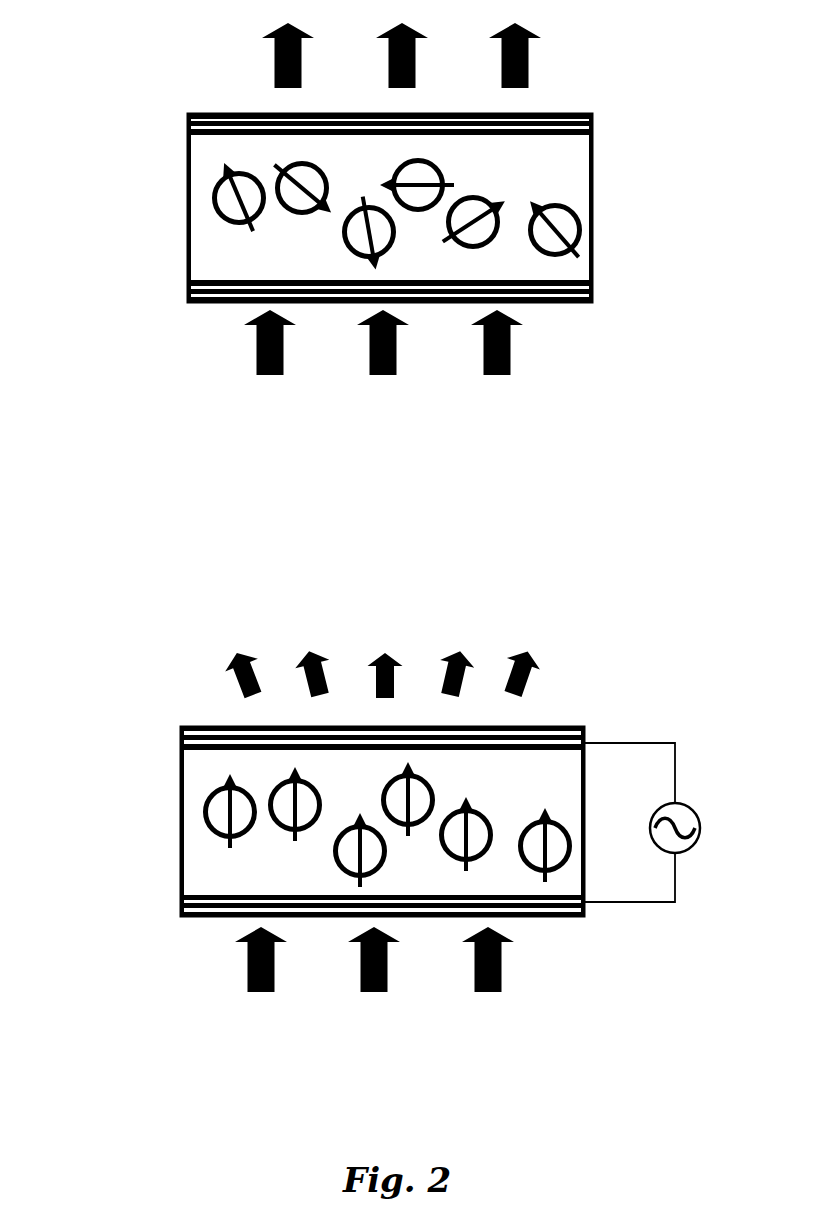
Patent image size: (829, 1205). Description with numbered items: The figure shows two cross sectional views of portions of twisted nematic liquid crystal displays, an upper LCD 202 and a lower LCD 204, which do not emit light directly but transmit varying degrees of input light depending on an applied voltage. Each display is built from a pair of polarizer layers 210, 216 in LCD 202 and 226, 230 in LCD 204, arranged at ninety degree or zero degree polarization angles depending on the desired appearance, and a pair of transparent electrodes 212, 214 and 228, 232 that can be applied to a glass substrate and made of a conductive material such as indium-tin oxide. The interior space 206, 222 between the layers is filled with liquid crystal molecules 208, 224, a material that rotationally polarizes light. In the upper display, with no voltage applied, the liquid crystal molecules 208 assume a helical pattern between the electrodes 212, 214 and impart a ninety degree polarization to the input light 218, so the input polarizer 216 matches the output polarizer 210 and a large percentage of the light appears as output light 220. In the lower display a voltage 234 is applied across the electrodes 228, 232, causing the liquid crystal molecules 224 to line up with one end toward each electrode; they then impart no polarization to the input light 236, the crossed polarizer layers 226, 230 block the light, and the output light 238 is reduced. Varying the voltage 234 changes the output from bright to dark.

The liquid crystal display 202 is at (221, 420).
The liquid crystal display 204 is at (213, 1018).
The interior space 206 is at (187, 215).
The liquid crystal molecules 208 is at (613, 213).
The polarizer layer 210 is at (187, 122).
The electrode 212 is at (188, 128).
The electrode 214 is at (187, 288).
The polarizer layer 216 is at (187, 298).
The input light 218 is at (560, 363).
The output light 220 is at (610, 60).
The interior space 222 is at (180, 822).
The liquid crystal molecules 224 is at (153, 802).
The polarizer layer 226 is at (180, 737).
The electrode 228 is at (180, 743).
The polarizer layer 230 is at (180, 910).
The electrode 232 is at (180, 900).
The voltage 234 is at (698, 840).
The input light 236 is at (530, 966).
The output light 238 is at (545, 682).